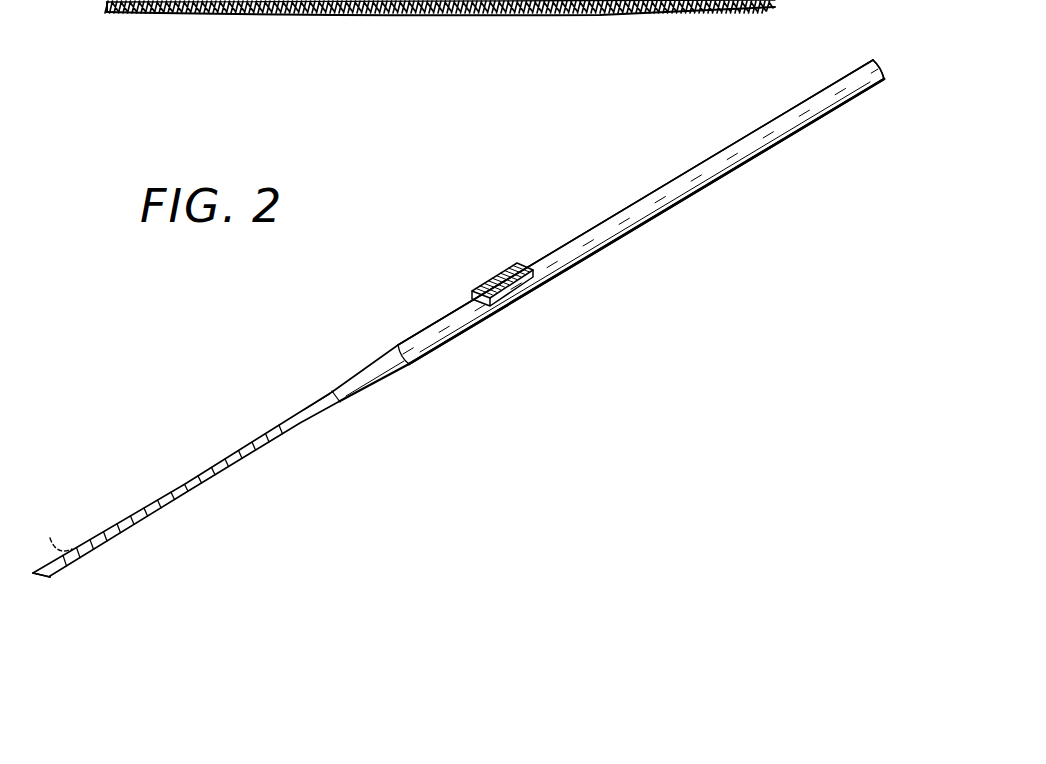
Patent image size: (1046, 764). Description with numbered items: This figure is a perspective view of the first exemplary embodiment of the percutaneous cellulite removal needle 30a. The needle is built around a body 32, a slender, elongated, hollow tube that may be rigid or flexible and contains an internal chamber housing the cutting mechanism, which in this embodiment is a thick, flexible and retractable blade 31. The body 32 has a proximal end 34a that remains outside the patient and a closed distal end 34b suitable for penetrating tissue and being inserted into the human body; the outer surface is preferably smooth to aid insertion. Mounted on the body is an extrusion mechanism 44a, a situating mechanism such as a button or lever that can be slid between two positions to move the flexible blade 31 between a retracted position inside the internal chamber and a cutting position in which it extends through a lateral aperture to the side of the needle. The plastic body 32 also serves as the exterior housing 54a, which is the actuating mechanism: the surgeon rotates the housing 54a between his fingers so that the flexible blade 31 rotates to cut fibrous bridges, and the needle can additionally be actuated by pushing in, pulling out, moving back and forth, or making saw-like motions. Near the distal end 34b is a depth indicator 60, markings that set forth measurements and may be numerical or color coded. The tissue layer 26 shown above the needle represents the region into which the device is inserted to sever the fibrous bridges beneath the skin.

The tissue / body wall 26 is at (667, 13).
The percutaneous cellulite removal needle 30a is at (766, 331).
The body 32 is at (587, 262).
The housing 54a is at (641, 212).
The proximal end 34a is at (886, 62).
The distal end 34b is at (42, 580).
The extrusion mechanism 44a is at (486, 288).
The depth indicator 60 is at (107, 535).
The flexible blade 31 is at (58, 538).